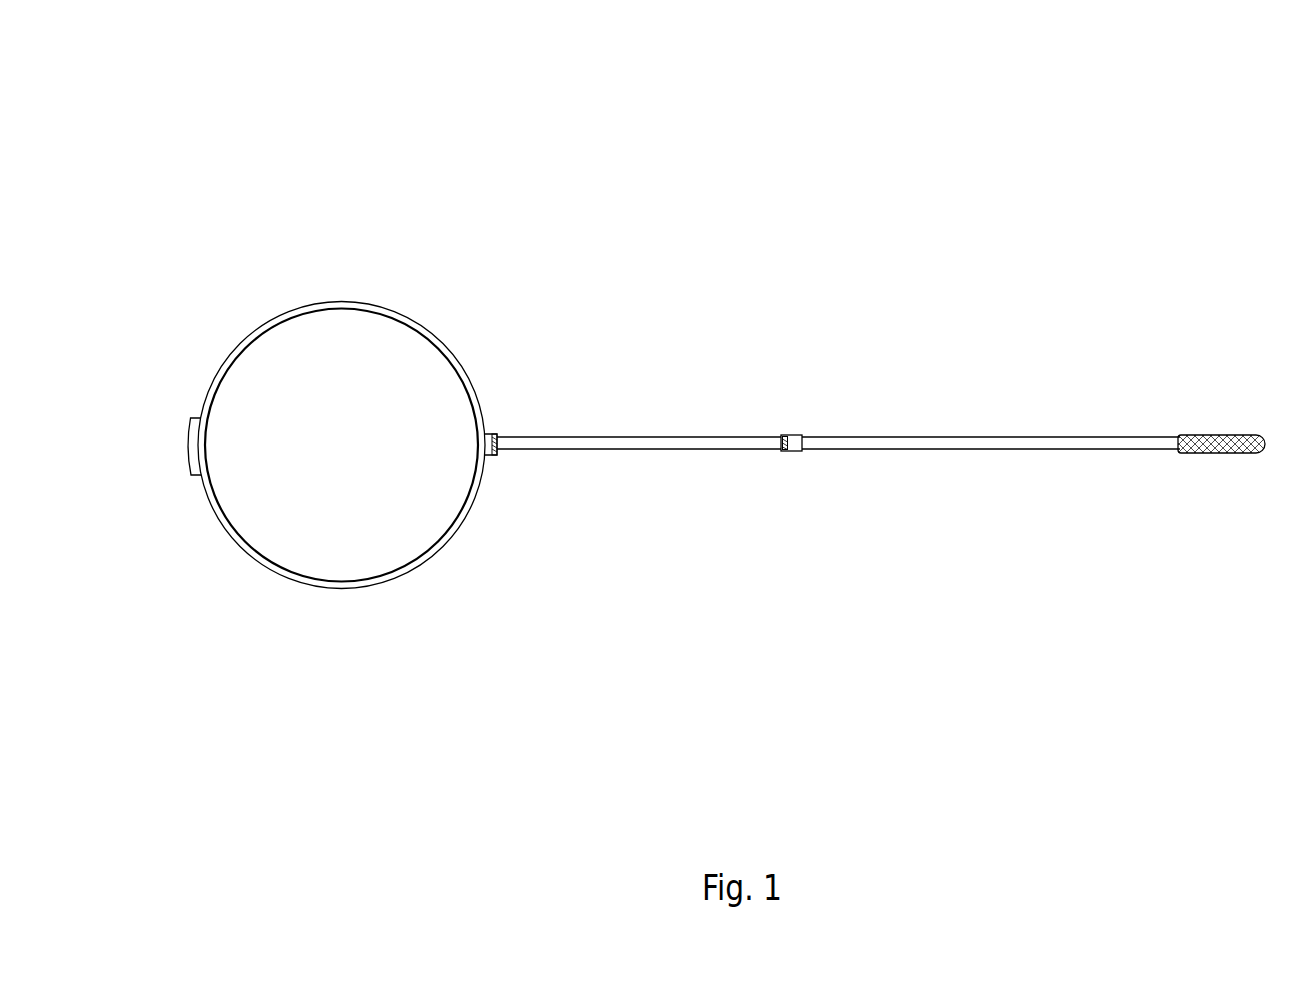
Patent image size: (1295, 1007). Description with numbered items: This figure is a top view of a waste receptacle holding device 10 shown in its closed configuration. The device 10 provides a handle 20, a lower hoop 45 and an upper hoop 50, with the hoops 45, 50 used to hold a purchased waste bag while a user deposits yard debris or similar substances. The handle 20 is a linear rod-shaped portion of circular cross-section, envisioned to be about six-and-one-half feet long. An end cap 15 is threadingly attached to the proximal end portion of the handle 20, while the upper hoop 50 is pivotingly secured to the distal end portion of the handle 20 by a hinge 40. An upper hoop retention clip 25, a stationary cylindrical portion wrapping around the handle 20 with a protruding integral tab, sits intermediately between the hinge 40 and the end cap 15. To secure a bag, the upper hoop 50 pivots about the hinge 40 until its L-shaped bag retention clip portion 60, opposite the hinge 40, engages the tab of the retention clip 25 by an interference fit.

The waste receptacle holding device 10 is at (1163, 179).
The end cap 15 is at (1230, 455).
The handle 20 is at (985, 436).
The upper hoop retention clip 25 is at (790, 452).
The hinge 40 is at (494, 436).
The lower hoop 45 is at (356, 302).
The upper hoop 50 is at (342, 445).
The bag retention clip portion 60 is at (193, 417).